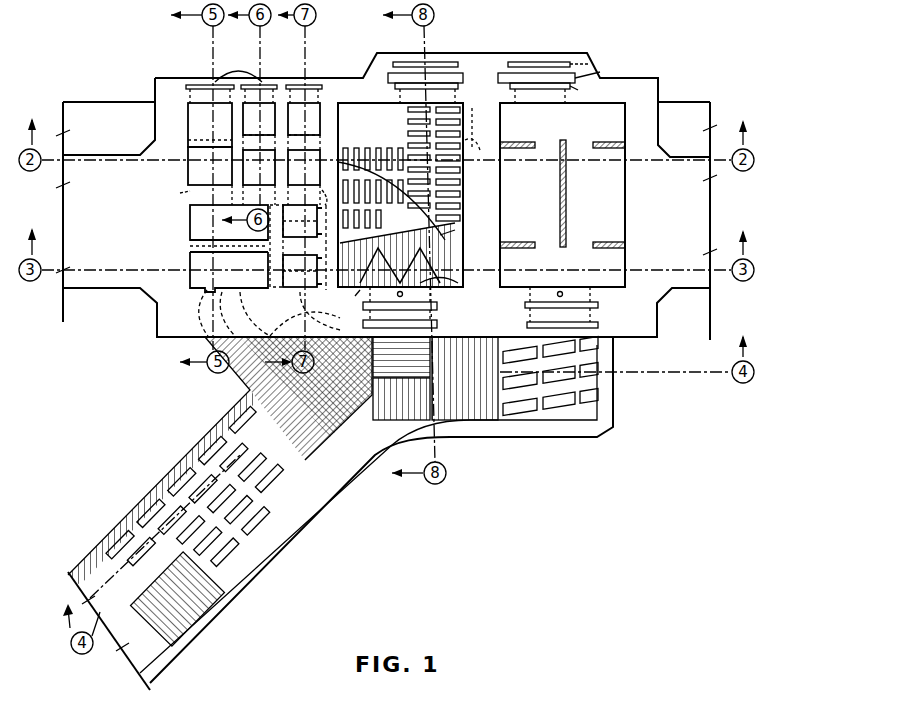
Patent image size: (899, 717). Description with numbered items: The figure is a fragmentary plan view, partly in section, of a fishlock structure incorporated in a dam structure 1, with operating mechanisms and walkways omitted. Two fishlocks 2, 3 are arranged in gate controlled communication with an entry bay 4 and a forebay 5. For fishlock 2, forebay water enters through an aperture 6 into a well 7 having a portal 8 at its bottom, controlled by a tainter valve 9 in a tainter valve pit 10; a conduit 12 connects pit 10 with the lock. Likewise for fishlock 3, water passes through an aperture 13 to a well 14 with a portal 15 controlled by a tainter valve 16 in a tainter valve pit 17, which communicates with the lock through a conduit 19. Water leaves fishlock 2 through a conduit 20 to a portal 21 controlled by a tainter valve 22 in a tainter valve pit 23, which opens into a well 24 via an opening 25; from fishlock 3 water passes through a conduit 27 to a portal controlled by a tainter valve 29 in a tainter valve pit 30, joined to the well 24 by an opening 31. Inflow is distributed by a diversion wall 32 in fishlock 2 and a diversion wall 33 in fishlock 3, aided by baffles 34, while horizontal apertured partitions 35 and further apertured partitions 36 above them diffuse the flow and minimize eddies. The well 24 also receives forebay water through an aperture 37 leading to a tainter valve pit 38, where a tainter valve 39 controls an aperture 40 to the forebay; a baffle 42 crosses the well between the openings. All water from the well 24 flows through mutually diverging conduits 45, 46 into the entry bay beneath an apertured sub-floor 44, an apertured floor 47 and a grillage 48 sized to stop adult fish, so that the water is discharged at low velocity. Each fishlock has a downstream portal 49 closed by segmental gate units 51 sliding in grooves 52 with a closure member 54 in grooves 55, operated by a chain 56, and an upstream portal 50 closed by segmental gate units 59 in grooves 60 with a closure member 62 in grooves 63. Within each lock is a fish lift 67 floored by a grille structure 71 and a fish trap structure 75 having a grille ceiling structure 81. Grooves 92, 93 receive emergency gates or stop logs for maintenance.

The dam structure 1 is at (386, 371).
The fishlock 2 is at (562, 195).
The fishlock 3 is at (400, 195).
The entry bay 4 is at (468, 422).
The forebay 5 is at (466, 43).
The aperture 6 is at (308, 84).
The well 7 is at (304, 119).
The portal 8 is at (304, 128).
The tainter valve 9 is at (304, 167).
The tainter valve pit 10 is at (304, 159).
The conduit 12 is at (476, 133).
The aperture 13 is at (258, 84).
The well 14 is at (259, 119).
The portal 15 is at (259, 128).
The tainter valve 16 is at (258, 167).
The tainter valve pit 17 is at (259, 159).
The conduit 19 is at (314, 194).
The conduit 20 is at (455, 238).
The portal 21 is at (320, 310).
The tainter valve 22 is at (302, 270).
The tainter valve pit 23 is at (300, 278).
The well 24 is at (229, 228).
The opening 25 is at (267, 313).
The conduit 27 is at (319, 247).
The tainter valve 29 is at (296, 245).
The tainter valve pit 30 is at (300, 228).
The opening 31 is at (276, 194).
The diversion wall 32 is at (567, 218).
The diversion wall 33 is at (450, 206).
The baffles 34 is at (610, 150).
The apertured partitions 35 is at (392, 152).
The apertured partitions 36 is at (461, 178).
The aperture 37 is at (174, 193).
The tainter valve pit 38 is at (210, 166).
The tainter valve 39 is at (210, 125).
The aperture 40 is at (205, 84).
The baffle 42 is at (218, 248).
The apertured sub-floor 44 is at (288, 482).
The diverging conduit 45 is at (305, 321).
The diverging conduit 46 is at (208, 322).
The apertured floor 47 is at (378, 440).
The grillage 48 is at (245, 405).
The downstream portal 49 is at (440, 326).
The upstream portal 50 is at (458, 64).
The segmental gate units 51 is at (440, 313).
The grooves 52 is at (598, 310).
The closure member 54 is at (440, 297).
The grooves 55 is at (598, 298).
The chain 56 is at (560, 292).
The segmental gate units 59 is at (458, 88).
The grooves 60 is at (584, 91).
The closure member 62 is at (481, 78).
The grooves 63 is at (599, 68).
The fish lift 67 is at (458, 232).
The grille structure 71 is at (445, 262).
The fish trap structure 75 is at (345, 298).
The ceiling structure 81 is at (458, 283).
The grooves 92 is at (238, 196).
The grooves 93 is at (573, 60).